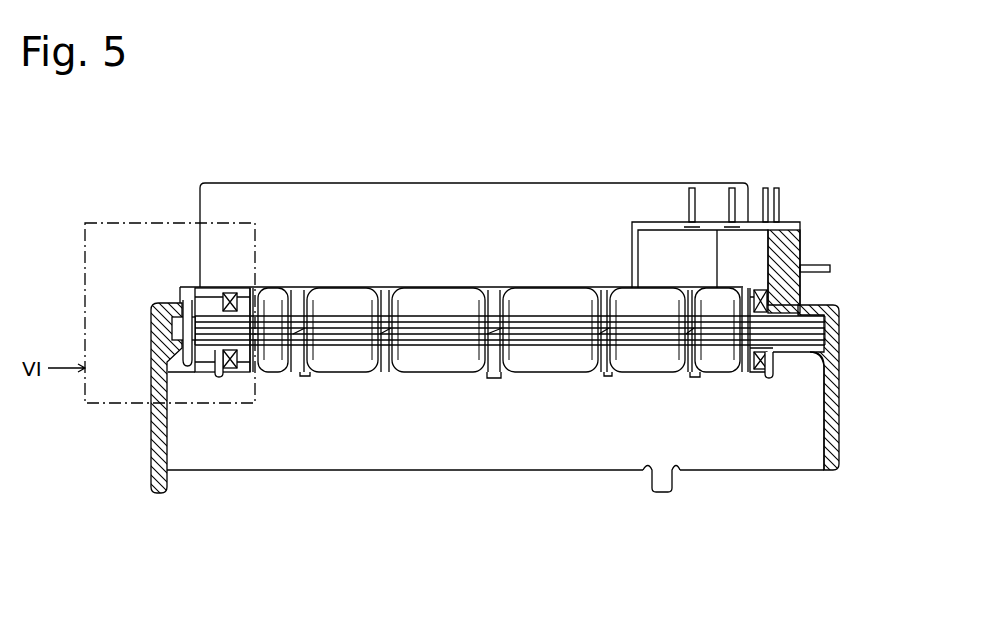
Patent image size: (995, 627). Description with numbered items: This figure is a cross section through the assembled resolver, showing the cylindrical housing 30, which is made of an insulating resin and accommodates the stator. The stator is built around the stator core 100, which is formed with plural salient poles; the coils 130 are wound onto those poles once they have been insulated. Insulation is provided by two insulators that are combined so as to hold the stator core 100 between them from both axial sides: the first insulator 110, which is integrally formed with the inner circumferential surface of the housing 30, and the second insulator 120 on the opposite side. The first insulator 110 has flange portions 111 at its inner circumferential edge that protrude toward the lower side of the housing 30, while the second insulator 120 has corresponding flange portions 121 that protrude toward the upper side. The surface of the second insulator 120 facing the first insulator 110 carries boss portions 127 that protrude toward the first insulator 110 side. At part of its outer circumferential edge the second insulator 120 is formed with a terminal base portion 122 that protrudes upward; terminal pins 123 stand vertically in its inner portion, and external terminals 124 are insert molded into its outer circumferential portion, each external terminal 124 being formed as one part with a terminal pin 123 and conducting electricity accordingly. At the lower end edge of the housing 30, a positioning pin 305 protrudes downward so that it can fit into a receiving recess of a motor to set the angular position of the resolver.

The housing 30 is at (365, 471).
The positioning pin 305 is at (663, 493).
The stator core 100 is at (422, 315).
The first insulator 110 is at (499, 329).
The flange portion 111 is at (442, 363).
The second insulator 120 is at (555, 305).
The flange portion 121 is at (338, 303).
The terminal base portion 122 is at (657, 243).
The terminal pin 123 is at (703, 202).
The external terminal 124 is at (817, 263).
The boss portion 127 is at (190, 370).
The coil 130 is at (758, 375).